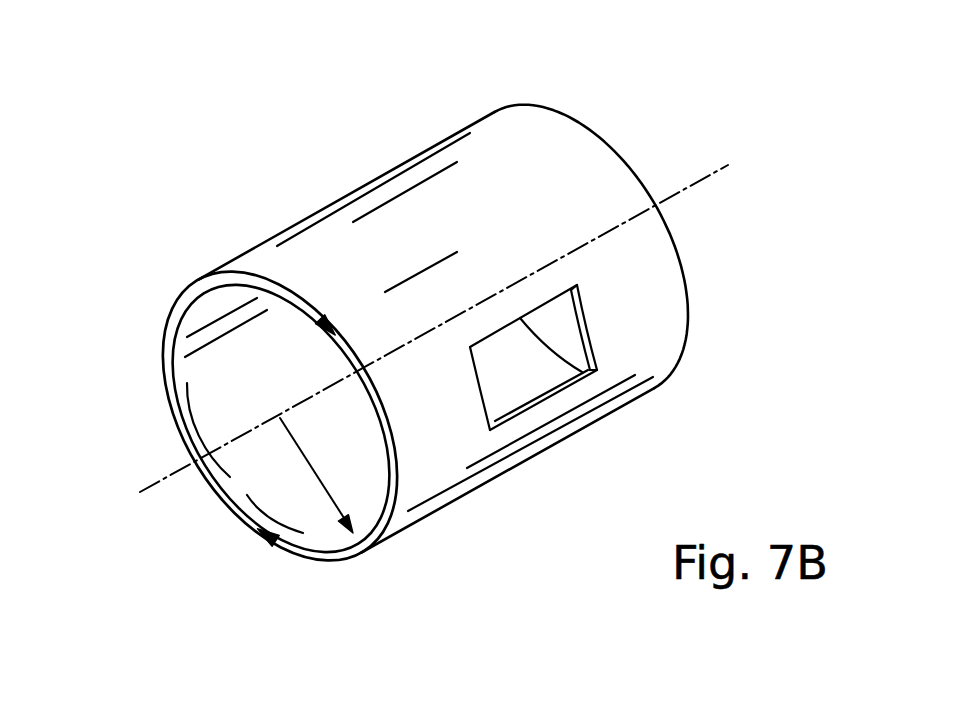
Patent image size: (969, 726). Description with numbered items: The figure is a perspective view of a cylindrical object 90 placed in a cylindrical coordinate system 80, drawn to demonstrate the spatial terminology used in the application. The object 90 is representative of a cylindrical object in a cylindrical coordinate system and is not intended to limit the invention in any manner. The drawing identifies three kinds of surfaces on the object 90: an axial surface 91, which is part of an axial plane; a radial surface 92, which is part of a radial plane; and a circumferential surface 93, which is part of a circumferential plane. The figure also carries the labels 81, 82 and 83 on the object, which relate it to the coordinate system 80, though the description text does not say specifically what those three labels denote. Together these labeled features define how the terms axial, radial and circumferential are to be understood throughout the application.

The cylindrical coordinate system 80 is at (608, 118).
The longitudinal axis 81 is at (153, 489).
The inner radius 82 is at (323, 485).
The end face 83 is at (172, 306).
The object 90 is at (465, 110).
The axial surface 91 is at (557, 387).
The radial surface 92 is at (298, 546).
The circumferential surface 93 is at (403, 213).